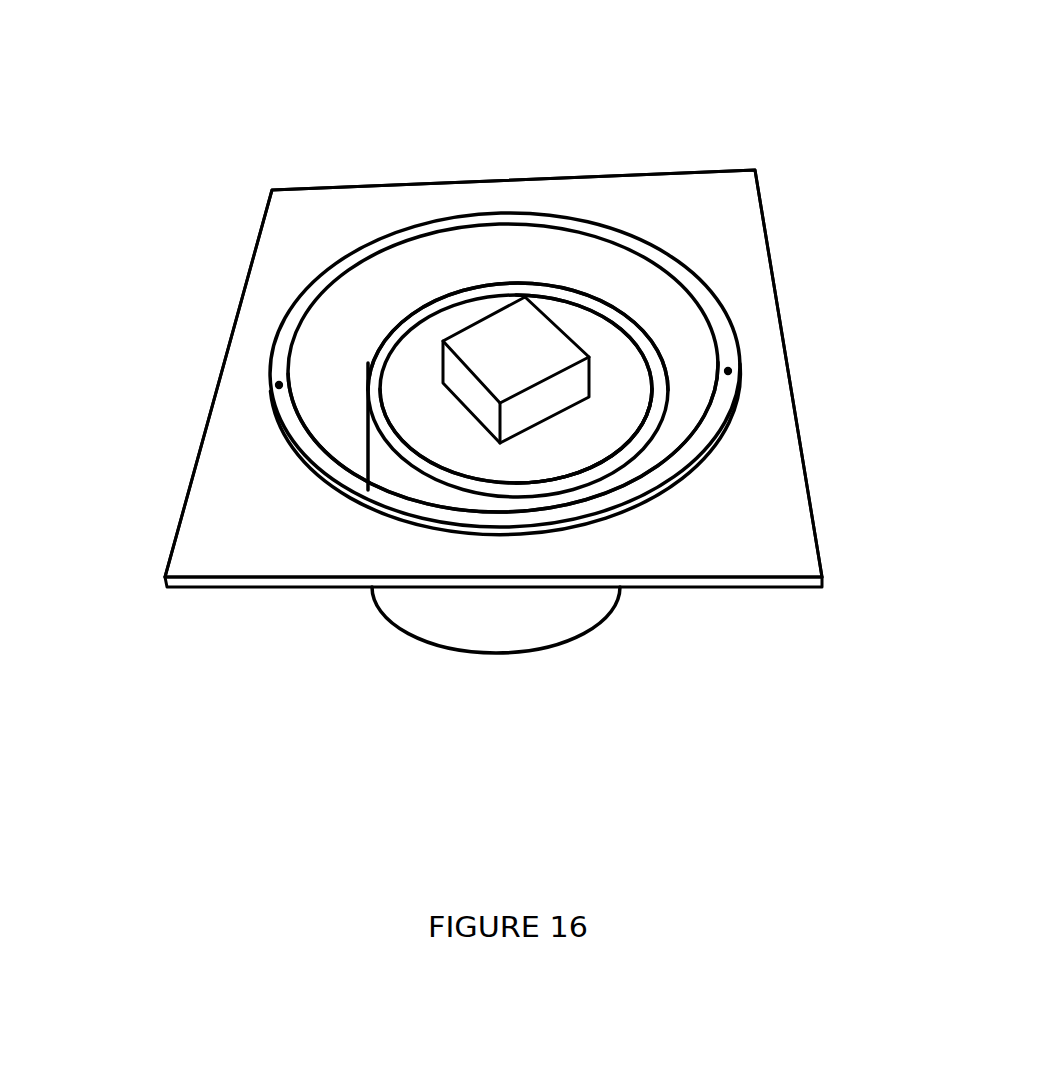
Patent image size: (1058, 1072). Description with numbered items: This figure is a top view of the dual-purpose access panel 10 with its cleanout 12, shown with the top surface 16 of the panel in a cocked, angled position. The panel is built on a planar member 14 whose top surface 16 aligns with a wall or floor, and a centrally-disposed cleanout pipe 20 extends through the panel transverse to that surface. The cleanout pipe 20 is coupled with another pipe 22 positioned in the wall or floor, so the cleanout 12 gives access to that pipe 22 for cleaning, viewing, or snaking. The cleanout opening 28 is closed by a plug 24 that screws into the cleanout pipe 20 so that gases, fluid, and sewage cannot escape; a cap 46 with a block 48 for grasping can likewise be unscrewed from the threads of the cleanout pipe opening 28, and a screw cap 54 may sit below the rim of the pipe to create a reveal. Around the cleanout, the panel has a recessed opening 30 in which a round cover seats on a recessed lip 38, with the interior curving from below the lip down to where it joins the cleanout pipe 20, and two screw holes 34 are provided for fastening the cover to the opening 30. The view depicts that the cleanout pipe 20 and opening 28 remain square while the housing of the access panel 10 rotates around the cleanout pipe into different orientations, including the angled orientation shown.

The access panel 10 is at (838, 124).
The cleanout 12 is at (535, 457).
The planar member 14 is at (208, 548).
The top surface 16 is at (286, 545).
The cleanout pipe 20 is at (587, 473).
The pipe 22 is at (485, 620).
The plug 24 is at (478, 455).
The opening 28 is at (643, 362).
The recessed opening 30 is at (282, 446).
The screw holes 34 is at (735, 371).
The recessed lip 38 is at (413, 238).
The cap 46 is at (586, 330).
The block 48 is at (492, 358).
The screw cap 54 is at (583, 445).